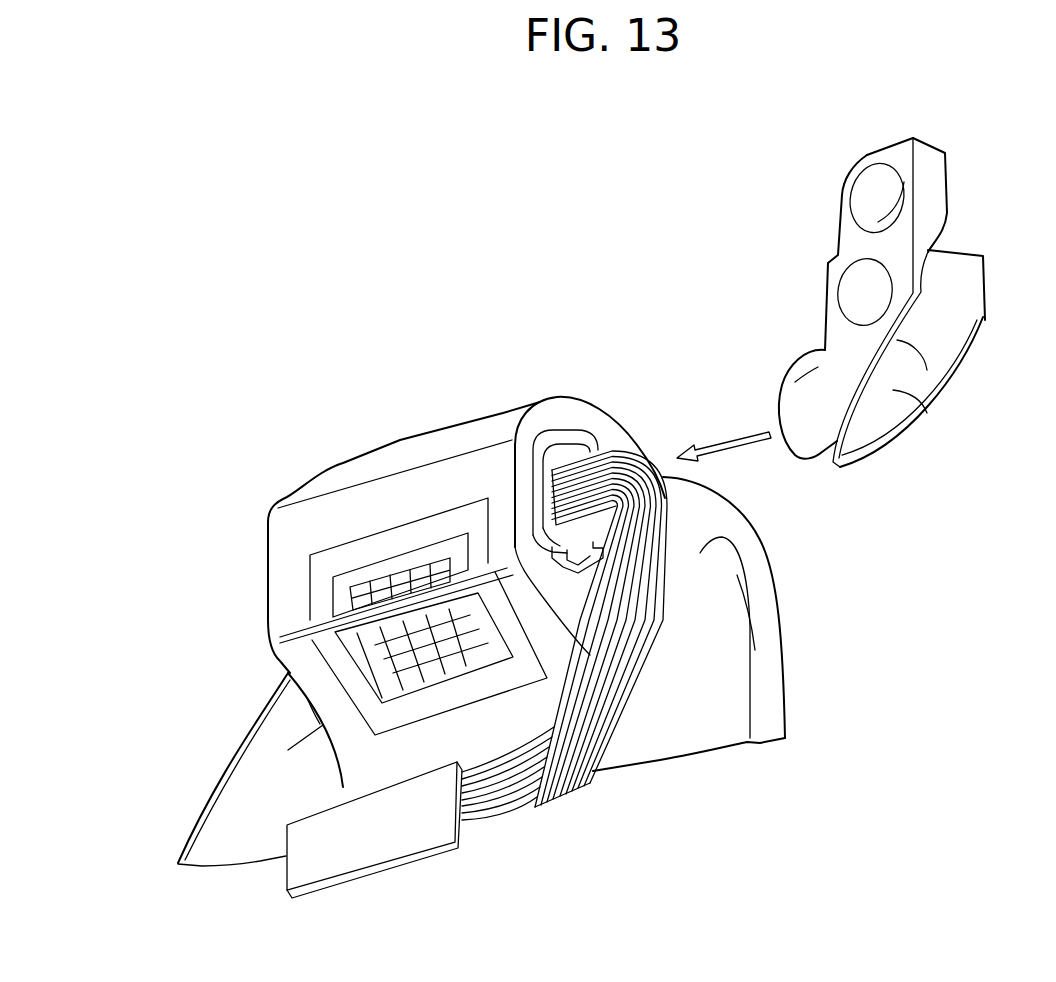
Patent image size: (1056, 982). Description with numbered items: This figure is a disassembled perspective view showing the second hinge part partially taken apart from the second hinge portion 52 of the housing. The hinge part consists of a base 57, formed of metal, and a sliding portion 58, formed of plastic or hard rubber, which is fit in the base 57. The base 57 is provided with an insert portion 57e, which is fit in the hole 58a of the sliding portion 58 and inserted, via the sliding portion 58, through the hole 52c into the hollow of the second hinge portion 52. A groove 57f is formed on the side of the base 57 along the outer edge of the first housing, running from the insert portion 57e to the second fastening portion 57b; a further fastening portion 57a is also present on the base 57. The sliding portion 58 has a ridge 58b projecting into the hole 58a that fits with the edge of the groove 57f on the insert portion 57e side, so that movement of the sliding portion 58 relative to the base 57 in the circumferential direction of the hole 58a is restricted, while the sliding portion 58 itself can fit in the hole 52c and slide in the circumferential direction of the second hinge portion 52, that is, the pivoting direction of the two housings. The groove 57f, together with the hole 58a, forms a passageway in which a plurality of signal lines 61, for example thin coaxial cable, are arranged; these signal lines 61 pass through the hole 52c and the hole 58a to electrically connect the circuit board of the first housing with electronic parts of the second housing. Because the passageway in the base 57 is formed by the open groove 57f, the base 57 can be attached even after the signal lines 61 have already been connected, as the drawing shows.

The second hinge portion 52 is at (343, 462).
The hole 52c is at (582, 425).
The base 57 is at (877, 308).
The upper mounting hole 57a is at (843, 186).
The second fastening portion 57b is at (835, 270).
The insert portion 57e is at (795, 382).
The groove 57f is at (927, 413).
The sliding portion 58 is at (515, 478).
The hole 58a is at (562, 455).
The ridge 58b is at (515, 525).
The signal lines 61 is at (632, 445).